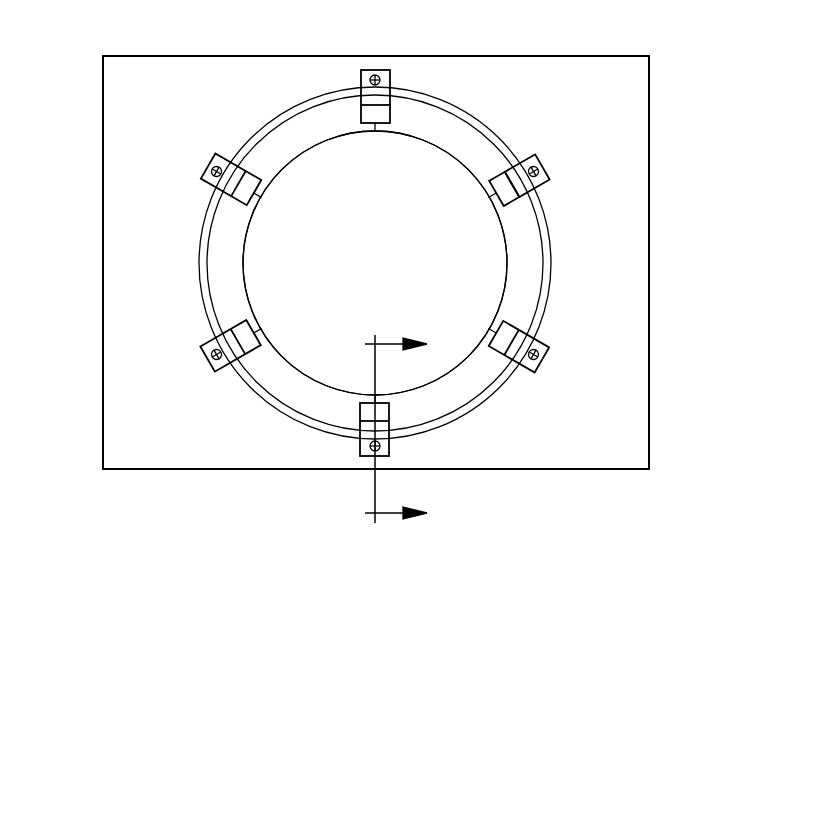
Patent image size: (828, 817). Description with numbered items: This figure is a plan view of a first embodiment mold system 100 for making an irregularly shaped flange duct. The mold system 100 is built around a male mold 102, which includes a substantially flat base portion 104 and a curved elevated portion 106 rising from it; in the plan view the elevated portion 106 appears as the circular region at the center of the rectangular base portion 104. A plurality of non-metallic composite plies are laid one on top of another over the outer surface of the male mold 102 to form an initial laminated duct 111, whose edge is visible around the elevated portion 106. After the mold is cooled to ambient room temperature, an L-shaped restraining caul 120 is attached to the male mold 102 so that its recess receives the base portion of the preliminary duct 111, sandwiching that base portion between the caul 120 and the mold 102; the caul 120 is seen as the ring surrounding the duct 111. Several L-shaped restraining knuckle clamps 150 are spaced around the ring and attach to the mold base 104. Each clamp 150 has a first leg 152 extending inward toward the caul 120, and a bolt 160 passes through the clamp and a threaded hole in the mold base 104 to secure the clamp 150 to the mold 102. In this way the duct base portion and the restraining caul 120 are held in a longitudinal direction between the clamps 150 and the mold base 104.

The mold system 100 is at (432, 47).
The male mold 102 is at (649, 251).
The base portion 104 is at (135, 121).
The curved elevated portion 106 is at (256, 222).
The initial laminated duct 111 is at (318, 146).
The restraining caul 120 is at (225, 286).
The restraining knuckle clamp 150 is at (519, 180).
The first leg 152 is at (500, 184).
The bolt 160 is at (546, 170).